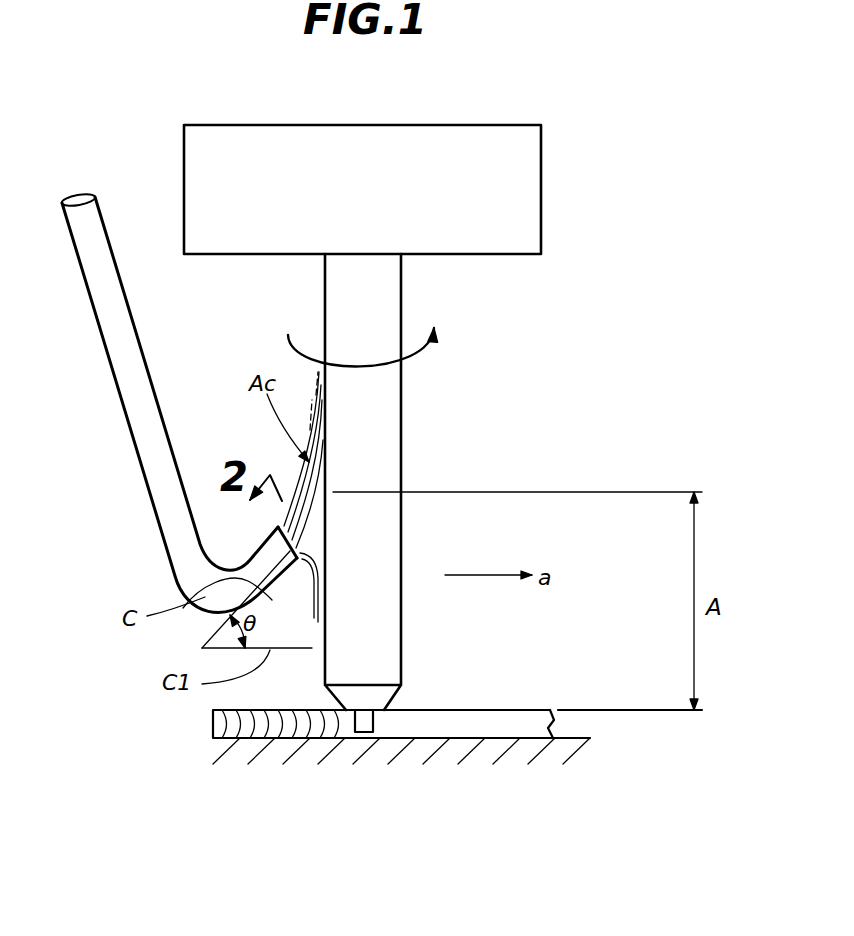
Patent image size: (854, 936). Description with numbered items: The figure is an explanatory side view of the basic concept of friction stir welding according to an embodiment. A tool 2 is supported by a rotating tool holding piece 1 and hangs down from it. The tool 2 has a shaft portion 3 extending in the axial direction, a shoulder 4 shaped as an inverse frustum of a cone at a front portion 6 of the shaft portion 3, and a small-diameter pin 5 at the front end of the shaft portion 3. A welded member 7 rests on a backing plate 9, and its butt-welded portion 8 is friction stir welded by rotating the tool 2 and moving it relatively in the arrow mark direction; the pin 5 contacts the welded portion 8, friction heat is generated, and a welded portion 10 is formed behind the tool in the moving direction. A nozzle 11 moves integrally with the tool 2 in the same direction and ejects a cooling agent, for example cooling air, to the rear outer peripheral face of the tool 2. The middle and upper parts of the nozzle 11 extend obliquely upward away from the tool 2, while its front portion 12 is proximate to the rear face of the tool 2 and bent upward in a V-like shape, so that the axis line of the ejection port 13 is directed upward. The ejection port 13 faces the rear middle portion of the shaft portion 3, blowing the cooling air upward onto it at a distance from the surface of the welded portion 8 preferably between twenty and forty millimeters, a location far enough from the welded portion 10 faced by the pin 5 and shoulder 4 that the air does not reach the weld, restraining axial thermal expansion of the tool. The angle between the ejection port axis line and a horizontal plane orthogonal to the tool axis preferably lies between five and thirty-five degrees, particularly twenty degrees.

The rotating tool holding piece 1 is at (549, 119).
The tool 2 is at (416, 408).
The shaft portion 3 is at (403, 465).
The shoulder 4 is at (336, 736).
The pin 5 is at (364, 740).
The front portion 6 is at (418, 686).
The welded member 7 is at (518, 702).
The butt-welded portion 8 is at (453, 711).
The backing plate 9 is at (467, 737).
The welded portion 10 is at (240, 736).
The nozzle 11 is at (153, 481).
The front portion 12 is at (272, 598).
The ejection port 13 is at (292, 545).